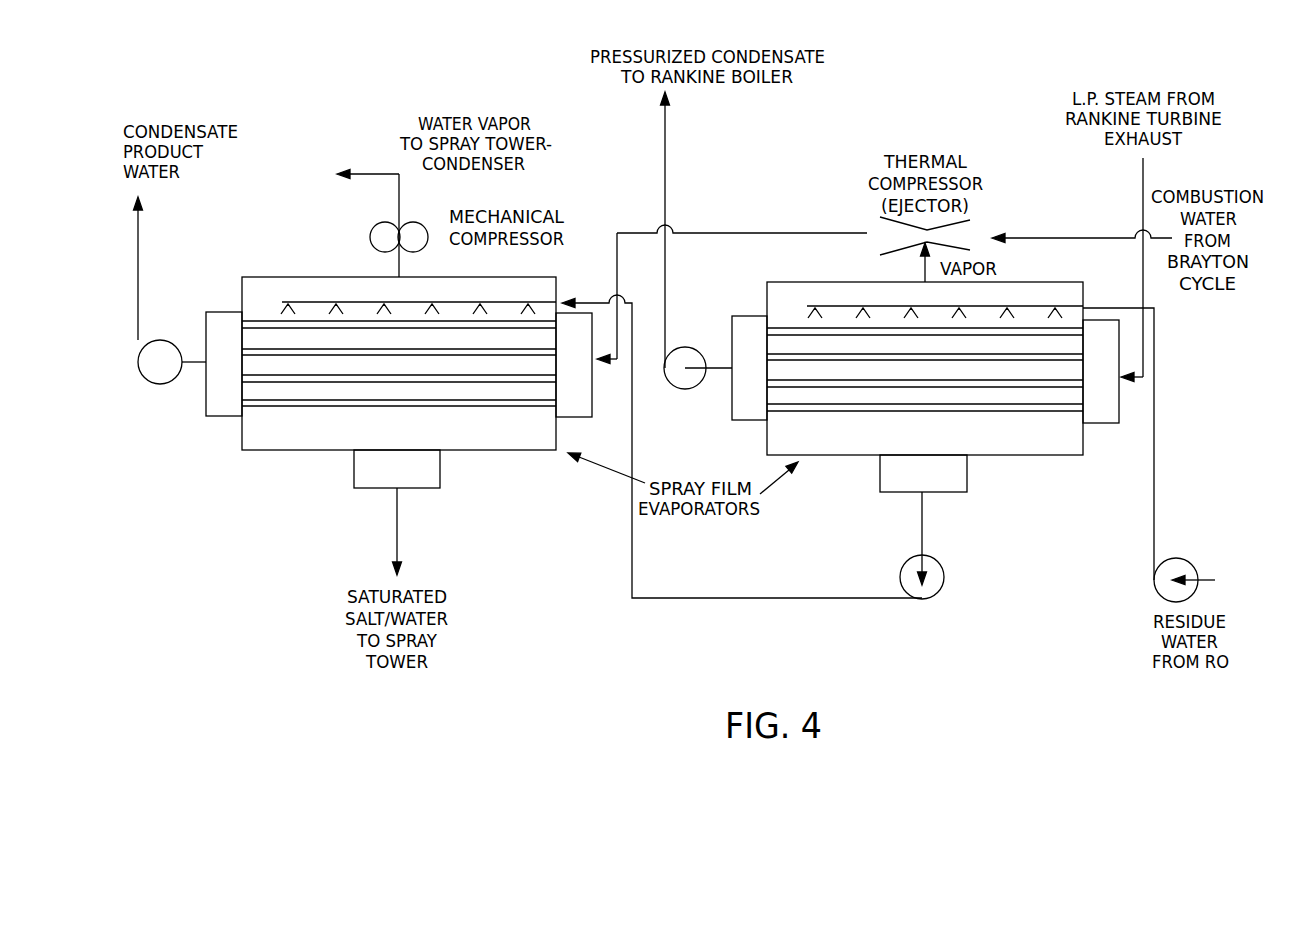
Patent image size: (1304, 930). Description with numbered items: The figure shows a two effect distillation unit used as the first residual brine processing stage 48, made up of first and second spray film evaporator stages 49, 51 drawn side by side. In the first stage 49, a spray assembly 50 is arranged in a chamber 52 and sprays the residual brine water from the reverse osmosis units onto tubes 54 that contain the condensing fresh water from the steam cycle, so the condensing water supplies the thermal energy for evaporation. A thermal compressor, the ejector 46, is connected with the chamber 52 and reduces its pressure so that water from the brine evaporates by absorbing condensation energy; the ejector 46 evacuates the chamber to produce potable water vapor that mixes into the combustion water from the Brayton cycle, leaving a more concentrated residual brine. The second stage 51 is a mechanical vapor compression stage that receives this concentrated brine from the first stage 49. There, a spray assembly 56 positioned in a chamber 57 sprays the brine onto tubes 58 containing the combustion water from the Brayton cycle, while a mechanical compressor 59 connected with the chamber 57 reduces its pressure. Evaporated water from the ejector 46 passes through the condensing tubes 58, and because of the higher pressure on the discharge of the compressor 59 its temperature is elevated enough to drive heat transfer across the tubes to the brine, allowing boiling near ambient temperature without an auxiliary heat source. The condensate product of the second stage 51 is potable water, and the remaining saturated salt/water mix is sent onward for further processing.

The ejector 46 is at (877, 218).
The first residual brine processing stage 48 is at (591, 643).
The first spray film evaporator stage 49 is at (906, 420).
The spray assembly 50 is at (835, 305).
The second spray film evaporator stage 51 is at (385, 351).
The chamber 52 is at (775, 345).
The tubes 54 is at (967, 362).
The spray assembly 56 is at (312, 302).
The chamber 57 is at (253, 387).
The tubes 58 is at (440, 357).
The mechanical compressor 59 is at (373, 228).